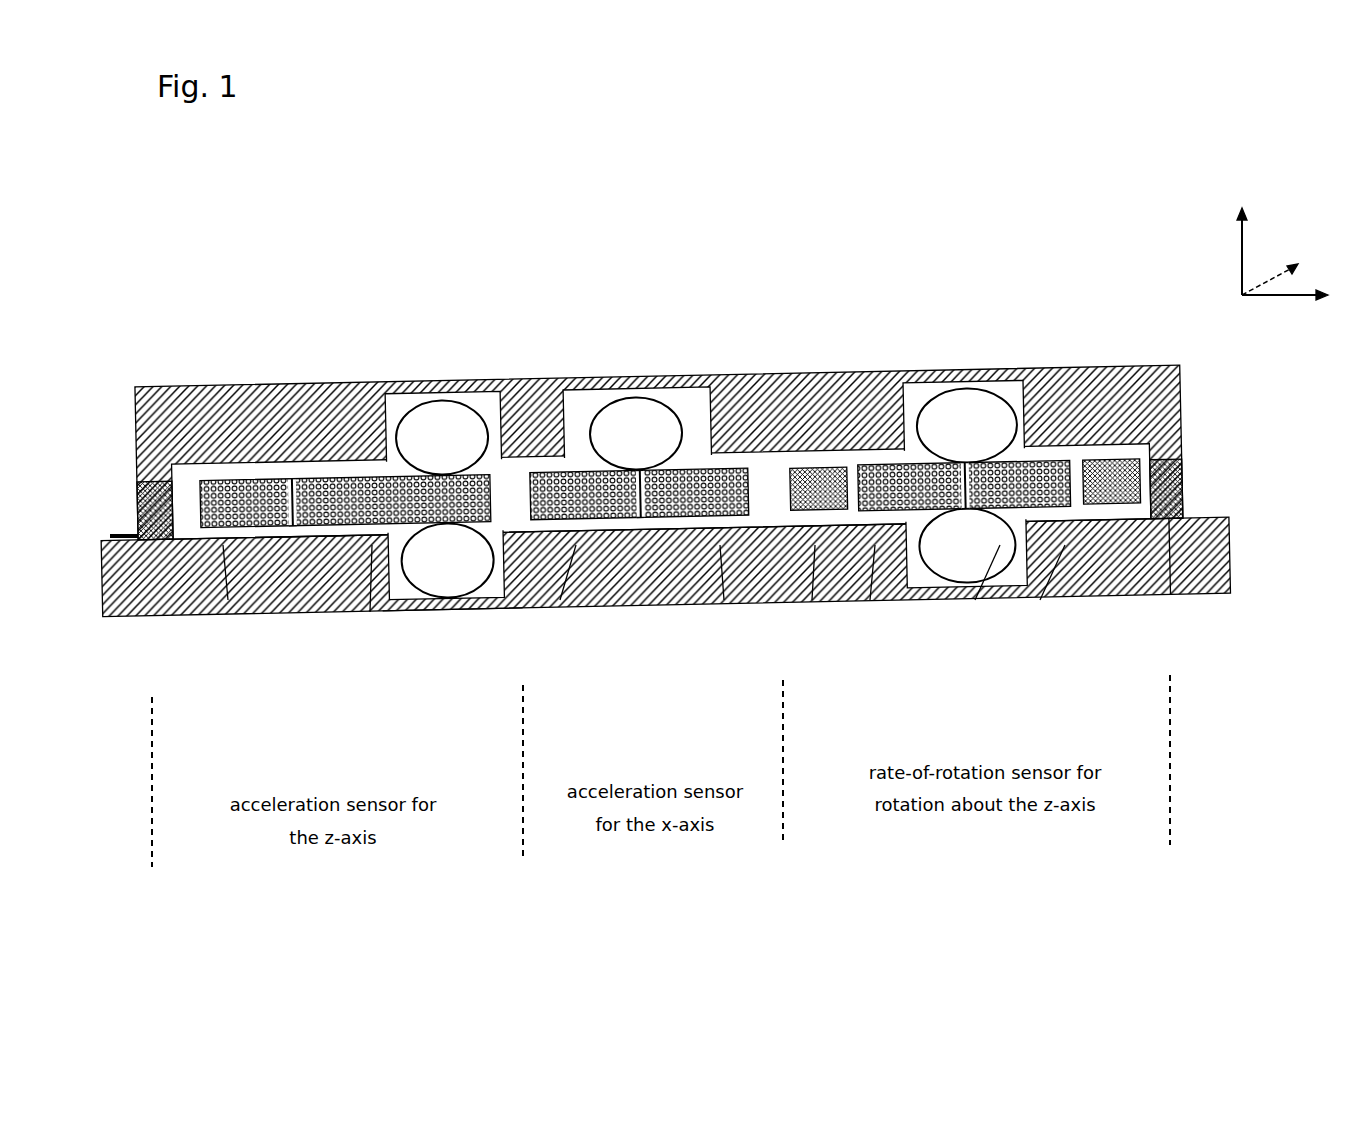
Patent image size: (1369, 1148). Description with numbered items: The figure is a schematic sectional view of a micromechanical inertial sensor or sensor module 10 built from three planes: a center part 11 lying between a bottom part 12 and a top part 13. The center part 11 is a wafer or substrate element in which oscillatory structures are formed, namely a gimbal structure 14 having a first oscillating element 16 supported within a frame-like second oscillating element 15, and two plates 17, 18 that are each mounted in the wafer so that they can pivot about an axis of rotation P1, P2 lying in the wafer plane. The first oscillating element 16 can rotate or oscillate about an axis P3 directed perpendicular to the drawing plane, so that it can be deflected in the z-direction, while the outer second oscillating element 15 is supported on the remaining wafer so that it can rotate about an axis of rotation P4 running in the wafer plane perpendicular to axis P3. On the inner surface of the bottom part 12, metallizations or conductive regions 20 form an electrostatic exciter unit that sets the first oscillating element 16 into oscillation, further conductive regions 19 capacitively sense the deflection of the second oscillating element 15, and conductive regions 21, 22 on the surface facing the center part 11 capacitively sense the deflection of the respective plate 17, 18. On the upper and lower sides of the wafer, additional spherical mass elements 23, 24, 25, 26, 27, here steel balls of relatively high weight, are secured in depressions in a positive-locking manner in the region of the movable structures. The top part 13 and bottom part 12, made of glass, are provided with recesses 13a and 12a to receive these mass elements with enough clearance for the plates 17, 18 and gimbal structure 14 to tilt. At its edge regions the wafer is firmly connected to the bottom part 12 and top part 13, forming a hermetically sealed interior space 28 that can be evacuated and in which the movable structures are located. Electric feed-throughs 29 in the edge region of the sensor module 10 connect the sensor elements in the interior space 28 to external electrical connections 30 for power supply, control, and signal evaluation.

The sensor module 10 is at (582, 198).
The center part 11 is at (1196, 488).
The bottom part 12 is at (1202, 573).
The recess 12a is at (470, 610).
The top part 13 is at (1190, 386).
The recess 13a is at (700, 378).
The gimbal structure 14 is at (1040, 440).
The second oscillating element 15 is at (838, 462).
The first oscillating element 16 is at (1030, 442).
The plate 17 is at (575, 470).
The plate 18 is at (348, 477).
The conductive regions 19 is at (815, 545).
The conductive regions 20 is at (875, 545).
The conductive regions 21 is at (576, 545).
The conductive regions 22 is at (223, 545).
The spherical mass element 23 is at (958, 441).
The spherical mass element 24 is at (956, 562).
The spherical mass element 25 is at (618, 448).
The spherical mass element 26 is at (427, 451).
The spherical mass element 27 is at (430, 572).
The interior space 28 is at (494, 502).
The electric feed-throughs 29 is at (145, 545).
The external electrical connections 30 is at (110, 534).
The axis of rotation P1 is at (645, 548).
The axis of rotation P2 is at (300, 548).
The axis of rotation P3 is at (950, 532).
The axis of rotation P4 is at (1188, 475).